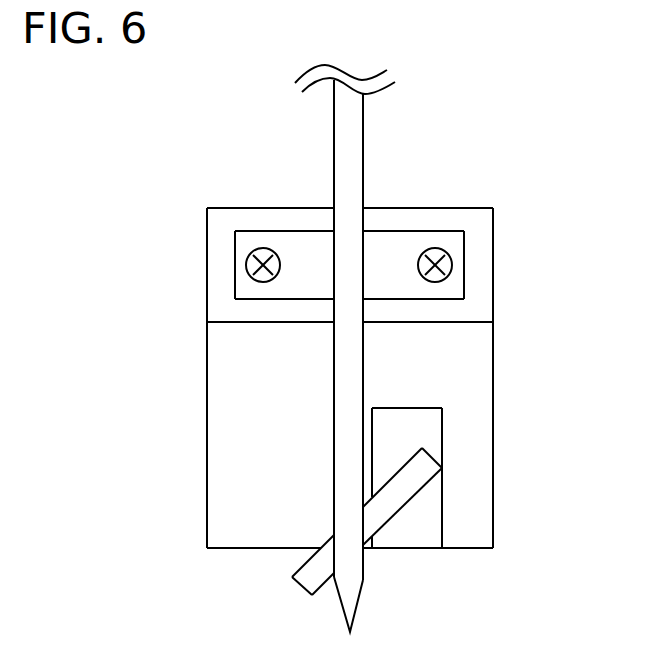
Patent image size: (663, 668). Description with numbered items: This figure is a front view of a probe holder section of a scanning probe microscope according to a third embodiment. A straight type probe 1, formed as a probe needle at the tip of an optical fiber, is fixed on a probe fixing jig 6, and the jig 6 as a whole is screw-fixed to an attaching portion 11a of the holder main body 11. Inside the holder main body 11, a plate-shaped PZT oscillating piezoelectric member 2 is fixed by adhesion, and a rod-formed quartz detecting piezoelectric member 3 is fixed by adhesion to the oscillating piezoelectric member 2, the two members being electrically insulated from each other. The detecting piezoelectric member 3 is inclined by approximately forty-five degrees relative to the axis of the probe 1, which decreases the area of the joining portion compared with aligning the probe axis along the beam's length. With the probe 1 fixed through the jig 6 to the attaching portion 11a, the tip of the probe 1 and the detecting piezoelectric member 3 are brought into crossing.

The probe 1 is at (343, 390).
The oscillating piezoelectric member 2 is at (410, 427).
The detecting piezoelectric member 3 is at (390, 497).
The probe fixing jig 6 is at (375, 253).
The holder main body 11 is at (230, 357).
The attaching portion 11a is at (220, 238).